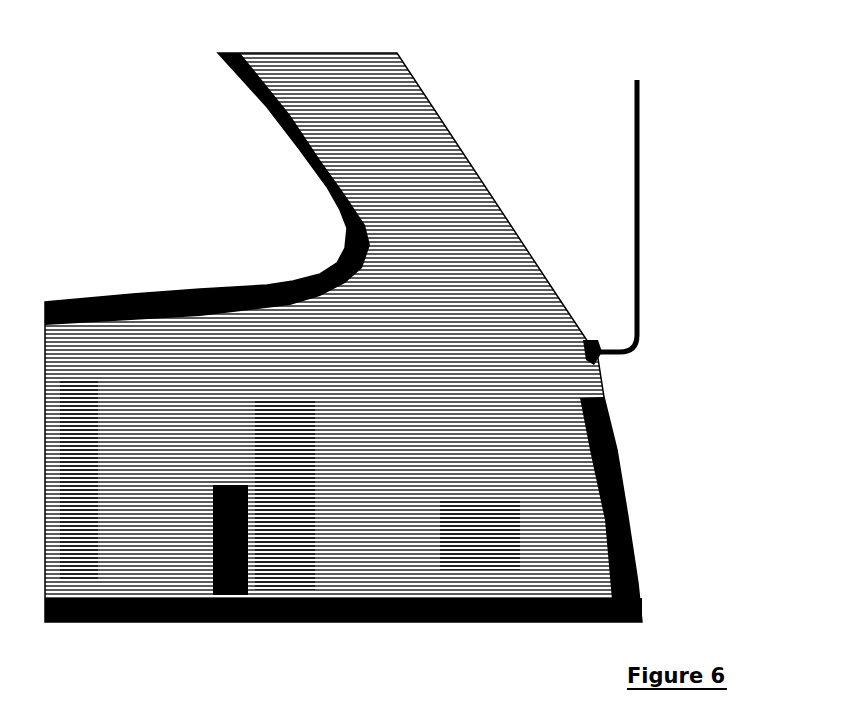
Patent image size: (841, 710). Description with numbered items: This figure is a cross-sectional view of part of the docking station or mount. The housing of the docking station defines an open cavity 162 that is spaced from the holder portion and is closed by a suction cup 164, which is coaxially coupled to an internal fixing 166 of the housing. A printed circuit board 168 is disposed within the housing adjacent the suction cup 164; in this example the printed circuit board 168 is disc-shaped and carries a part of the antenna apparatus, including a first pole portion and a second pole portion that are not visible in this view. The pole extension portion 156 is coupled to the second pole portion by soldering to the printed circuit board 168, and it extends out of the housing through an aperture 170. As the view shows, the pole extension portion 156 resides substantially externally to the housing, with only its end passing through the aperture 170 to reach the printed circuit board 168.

The pole extension portion 156 is at (638, 163).
The open cavity 162 is at (77, 567).
The suction cup 164 is at (563, 598).
The internal fixing 166 is at (288, 495).
The printed circuit board 168 is at (497, 530).
The aperture 170 is at (590, 360).